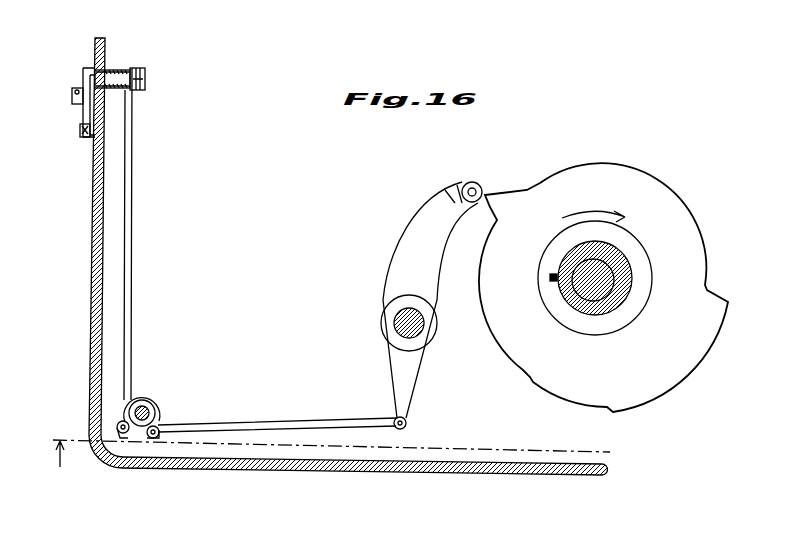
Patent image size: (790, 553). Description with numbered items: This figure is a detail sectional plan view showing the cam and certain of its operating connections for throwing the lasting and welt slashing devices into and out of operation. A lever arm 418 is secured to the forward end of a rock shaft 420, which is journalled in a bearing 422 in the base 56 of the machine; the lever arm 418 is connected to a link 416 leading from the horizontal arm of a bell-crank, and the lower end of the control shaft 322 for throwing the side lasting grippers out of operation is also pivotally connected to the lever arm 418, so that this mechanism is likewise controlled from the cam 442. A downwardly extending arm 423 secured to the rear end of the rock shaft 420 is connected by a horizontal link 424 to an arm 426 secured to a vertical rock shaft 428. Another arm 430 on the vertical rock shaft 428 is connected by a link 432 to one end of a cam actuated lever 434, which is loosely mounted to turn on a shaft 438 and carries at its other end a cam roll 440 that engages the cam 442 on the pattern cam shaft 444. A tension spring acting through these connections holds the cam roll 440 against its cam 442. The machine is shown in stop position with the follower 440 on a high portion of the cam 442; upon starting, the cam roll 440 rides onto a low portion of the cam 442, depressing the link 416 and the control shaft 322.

The base 56 is at (97, 286).
The control shaft 322 is at (77, 88).
The link 416 is at (72, 137).
The lever arm 418 is at (85, 117).
The rock shaft 420 is at (118, 69).
The bearing 422 is at (118, 73).
The downwardly extending arm 423 is at (146, 89).
The horizontal link 424 is at (127, 217).
The arm 426 is at (331, 457).
The vertical rock shaft 428 is at (150, 403).
The arm 430 is at (158, 425).
The link 432 is at (290, 423).
The cam actuated lever 434 is at (405, 268).
The shaft 438 is at (395, 327).
The cam roll 440 is at (478, 185).
The cam 442 is at (635, 192).
The pattern cam shaft 444 is at (623, 270).